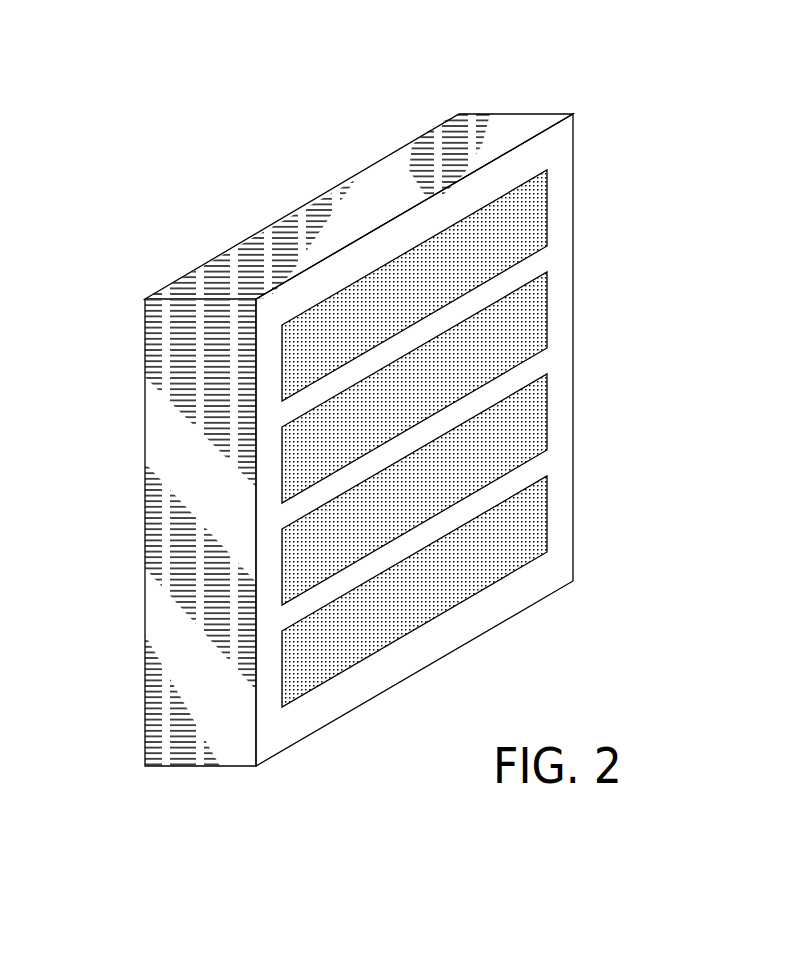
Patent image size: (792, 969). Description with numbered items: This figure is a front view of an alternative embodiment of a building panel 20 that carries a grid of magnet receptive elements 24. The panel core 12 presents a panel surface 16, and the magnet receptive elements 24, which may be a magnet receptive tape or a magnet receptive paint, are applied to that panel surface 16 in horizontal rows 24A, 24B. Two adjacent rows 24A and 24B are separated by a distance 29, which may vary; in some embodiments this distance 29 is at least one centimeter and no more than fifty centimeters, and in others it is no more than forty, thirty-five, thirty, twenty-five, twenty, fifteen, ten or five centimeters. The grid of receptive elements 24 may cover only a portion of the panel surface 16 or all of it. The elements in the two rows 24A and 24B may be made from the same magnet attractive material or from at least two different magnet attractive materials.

The building panel 20 is at (661, 103).
The panel core 12 is at (170, 527).
The panel surface 16 is at (330, 702).
The distance 29 is at (567, 458).
The grid of magnet receptive elements 24 is at (277, 473).
The first horizontal row 24A is at (547, 219).
The second horizontal row 24B is at (535, 337).